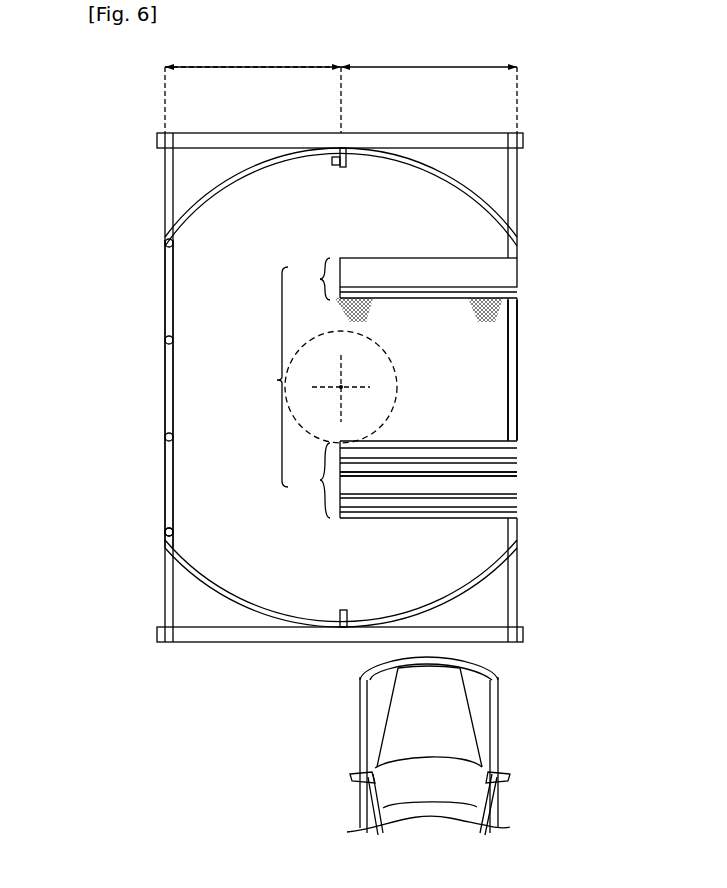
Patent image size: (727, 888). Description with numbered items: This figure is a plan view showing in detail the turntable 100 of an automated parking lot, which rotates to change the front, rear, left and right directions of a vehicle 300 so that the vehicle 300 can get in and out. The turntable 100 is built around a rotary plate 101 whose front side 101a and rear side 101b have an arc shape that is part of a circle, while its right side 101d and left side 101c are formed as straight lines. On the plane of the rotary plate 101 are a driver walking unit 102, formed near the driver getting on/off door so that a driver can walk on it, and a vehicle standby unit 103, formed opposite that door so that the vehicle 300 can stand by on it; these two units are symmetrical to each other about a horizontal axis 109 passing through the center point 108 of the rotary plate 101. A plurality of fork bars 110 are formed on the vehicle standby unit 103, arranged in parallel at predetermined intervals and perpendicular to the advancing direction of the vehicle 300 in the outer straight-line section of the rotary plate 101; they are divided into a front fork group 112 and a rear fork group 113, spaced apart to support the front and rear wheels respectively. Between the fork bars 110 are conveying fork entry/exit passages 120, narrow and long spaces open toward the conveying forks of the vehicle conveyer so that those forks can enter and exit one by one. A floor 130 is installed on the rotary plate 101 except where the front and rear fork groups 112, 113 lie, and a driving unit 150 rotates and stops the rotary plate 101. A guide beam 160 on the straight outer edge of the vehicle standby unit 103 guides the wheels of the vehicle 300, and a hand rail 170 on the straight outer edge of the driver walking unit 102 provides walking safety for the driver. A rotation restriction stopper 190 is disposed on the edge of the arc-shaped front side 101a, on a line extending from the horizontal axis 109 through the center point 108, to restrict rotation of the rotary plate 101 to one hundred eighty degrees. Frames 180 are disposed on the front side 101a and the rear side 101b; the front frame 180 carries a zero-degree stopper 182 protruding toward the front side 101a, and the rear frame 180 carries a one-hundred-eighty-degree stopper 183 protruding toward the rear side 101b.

The turntable 100 is at (208, 628).
The rotary plate 101 is at (188, 283).
The front side 101a is at (250, 187).
The rear side 101b is at (266, 597).
The left side 101c is at (184, 397).
The right side 101d is at (500, 383).
The driver walking unit 102 is at (253, 87).
The vehicle standby unit 103 is at (429, 87).
The center point 108 is at (345, 385).
The horizontal axis 109 is at (340, 368).
The fork bars 110 is at (543, 445).
The front fork group 112 is at (405, 279).
The rear fork group 113 is at (404, 479).
The conveying fork entry/exit passages 120 is at (525, 478).
The floor 130 is at (503, 308).
The driving unit 150 is at (397, 402).
The guide beam 160 is at (517, 348).
The hand rail 170 is at (155, 470).
The frames 180 is at (472, 133).
The 0-degree stopper 182 is at (347, 167).
The 180-degree stopper 183 is at (345, 610).
The rotation restriction stopper 190 is at (333, 167).
The vehicle 300 is at (493, 743).